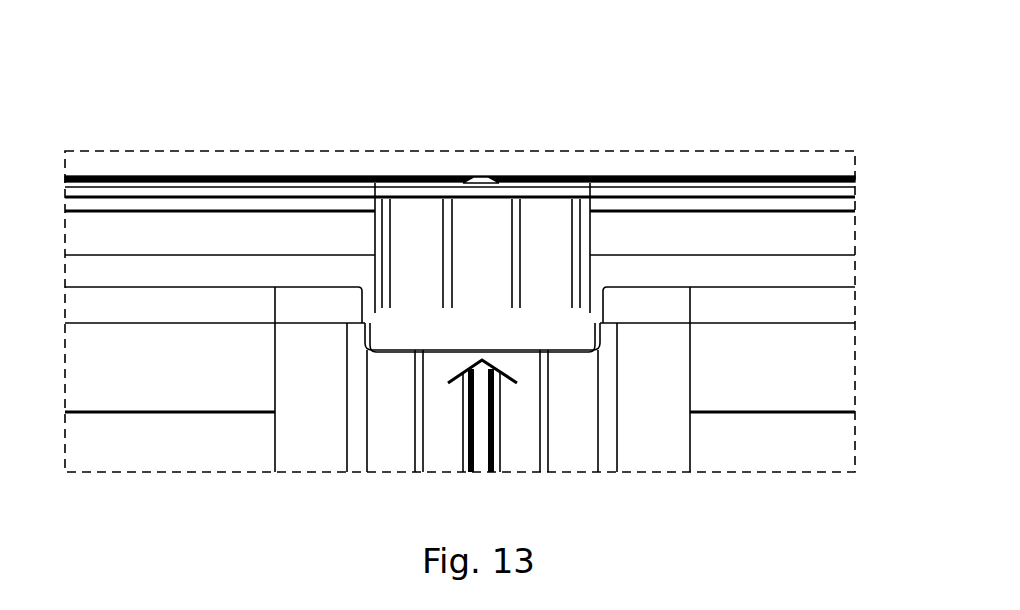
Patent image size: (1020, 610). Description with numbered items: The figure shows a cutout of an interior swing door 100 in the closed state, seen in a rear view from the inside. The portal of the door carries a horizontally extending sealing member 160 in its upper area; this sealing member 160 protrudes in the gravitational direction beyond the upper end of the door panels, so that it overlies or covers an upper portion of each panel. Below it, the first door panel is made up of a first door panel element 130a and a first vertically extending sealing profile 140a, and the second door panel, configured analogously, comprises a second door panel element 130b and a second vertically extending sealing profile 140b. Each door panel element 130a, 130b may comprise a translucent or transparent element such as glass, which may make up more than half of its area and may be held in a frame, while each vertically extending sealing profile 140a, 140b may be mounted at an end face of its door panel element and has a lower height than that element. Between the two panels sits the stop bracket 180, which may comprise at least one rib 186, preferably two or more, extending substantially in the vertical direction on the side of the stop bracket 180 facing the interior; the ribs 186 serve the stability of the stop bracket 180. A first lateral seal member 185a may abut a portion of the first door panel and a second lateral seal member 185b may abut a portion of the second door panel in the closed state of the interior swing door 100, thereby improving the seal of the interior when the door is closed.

The interior swing door 100 is at (157, 63).
The first door panel element 130a is at (107, 372).
The second door panel element 130b is at (772, 370).
The first vertically extending sealing profile 140a is at (435, 457).
The second vertically extending sealing profile 140b is at (520, 457).
The horizontally extending sealing member 160 is at (630, 235).
The stop bracket 180 is at (423, 232).
The first lateral seal member 185a is at (363, 303).
The second lateral seal member 185b is at (600, 303).
The rib 186 is at (513, 240).